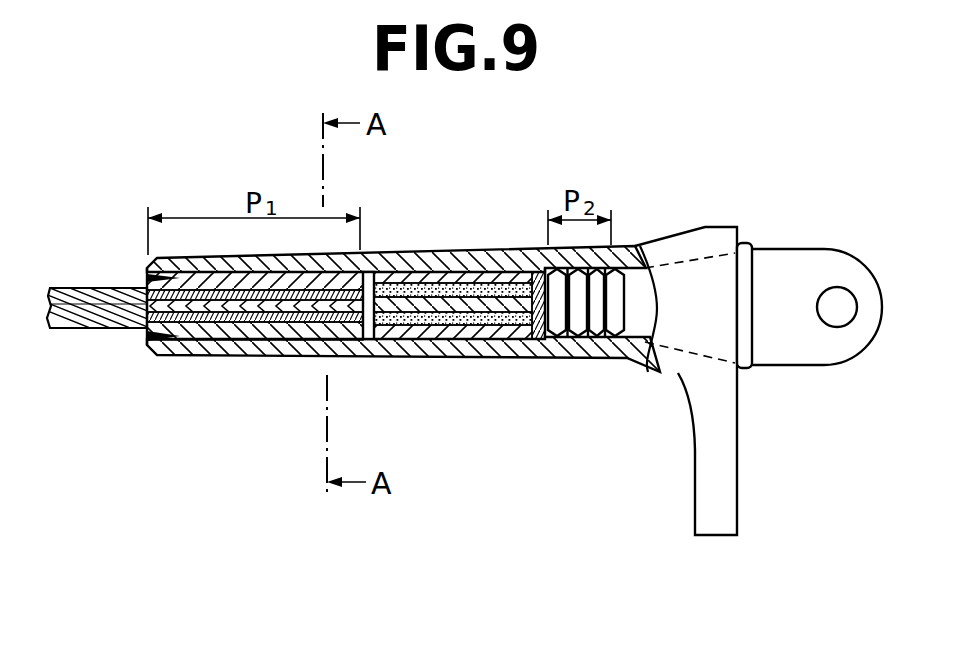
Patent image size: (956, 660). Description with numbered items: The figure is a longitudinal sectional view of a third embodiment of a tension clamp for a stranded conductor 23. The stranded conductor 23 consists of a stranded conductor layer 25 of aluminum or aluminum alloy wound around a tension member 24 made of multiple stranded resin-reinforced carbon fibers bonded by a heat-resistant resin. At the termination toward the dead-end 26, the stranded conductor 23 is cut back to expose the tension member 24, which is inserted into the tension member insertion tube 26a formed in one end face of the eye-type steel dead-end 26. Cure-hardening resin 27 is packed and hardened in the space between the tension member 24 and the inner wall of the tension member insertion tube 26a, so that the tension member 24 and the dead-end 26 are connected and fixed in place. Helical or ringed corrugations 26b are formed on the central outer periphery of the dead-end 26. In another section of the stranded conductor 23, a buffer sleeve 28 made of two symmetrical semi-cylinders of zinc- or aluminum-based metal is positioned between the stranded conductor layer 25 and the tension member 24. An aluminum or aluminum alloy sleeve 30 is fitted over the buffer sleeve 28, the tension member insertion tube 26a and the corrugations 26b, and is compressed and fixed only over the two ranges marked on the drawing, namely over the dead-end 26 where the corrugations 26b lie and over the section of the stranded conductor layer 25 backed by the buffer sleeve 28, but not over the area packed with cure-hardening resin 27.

The stranded conductor 23 is at (128, 336).
The sleeve 30 is at (170, 352).
The buffer sleeve 28 is at (228, 332).
The stranded conductor layer 25 is at (293, 332).
The tension member 24 is at (420, 340).
The cure-hardening resin 27 is at (473, 340).
The tension member insertion tube 26a is at (519, 338).
The corrugations 26b is at (594, 336).
The dead-end 26 is at (778, 248).